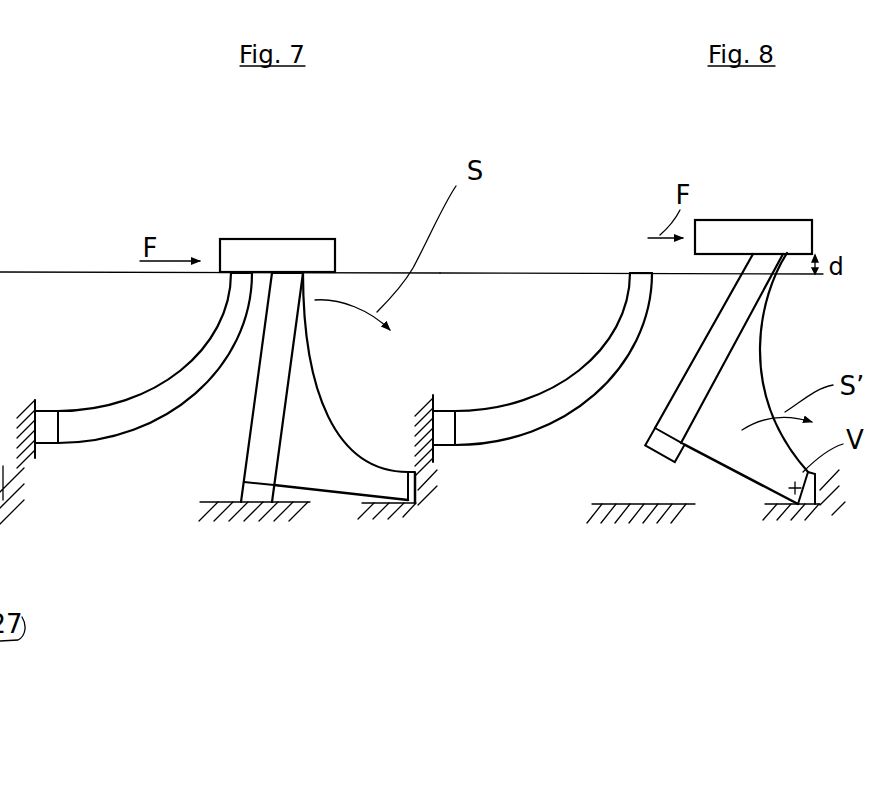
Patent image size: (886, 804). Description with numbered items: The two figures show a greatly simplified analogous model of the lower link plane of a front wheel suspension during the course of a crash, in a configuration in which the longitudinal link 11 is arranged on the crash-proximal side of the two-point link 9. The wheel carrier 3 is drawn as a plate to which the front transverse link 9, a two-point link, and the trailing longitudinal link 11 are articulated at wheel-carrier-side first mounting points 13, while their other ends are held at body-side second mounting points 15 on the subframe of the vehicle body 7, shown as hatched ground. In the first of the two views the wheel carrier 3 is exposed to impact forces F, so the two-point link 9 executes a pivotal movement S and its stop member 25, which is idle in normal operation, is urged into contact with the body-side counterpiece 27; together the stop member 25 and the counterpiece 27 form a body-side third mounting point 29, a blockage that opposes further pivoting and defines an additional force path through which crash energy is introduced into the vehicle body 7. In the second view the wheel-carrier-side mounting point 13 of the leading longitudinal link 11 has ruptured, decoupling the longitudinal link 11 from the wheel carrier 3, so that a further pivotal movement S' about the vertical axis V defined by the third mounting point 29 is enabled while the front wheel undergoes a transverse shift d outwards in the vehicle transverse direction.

In FIG. 7, the wheel carrier 3 is at (320, 254).
In FIG. 8, the wheel carrier 3 is at (812, 232).
In FIG. 7, the vehicle body 7 is at (222, 503).
In FIG. 8, the vehicle body 7 is at (645, 507).
In FIG. 7, the front transverse link 9 is at (268, 426).
In FIG. 8, the front transverse link 9 is at (720, 330).
In FIG. 7, the longitudinal link 11 is at (134, 407).
In FIG. 8, the longitudinal link 11 is at (535, 405).
In FIG. 7, the wheel-carrier-side first mounting point 13 is at (246, 272).
In FIG. 8, the wheel-carrier-side first mounting point 13 is at (637, 273).
In FIG. 7, the body-side second mounting point 15 is at (47, 420).
In FIG. 8, the body-side second mounting point 15 is at (445, 420).
In FIG. 7, the stop member 25 is at (393, 482).
In FIG. 8, the stop member 25 is at (735, 385).
In FIG. 7, the body-side counterpiece 27 is at (372, 507).
In FIG. 7, the third mounting point 29 is at (369, 489).
In FIG. 8, the third mounting point 29 is at (759, 468).